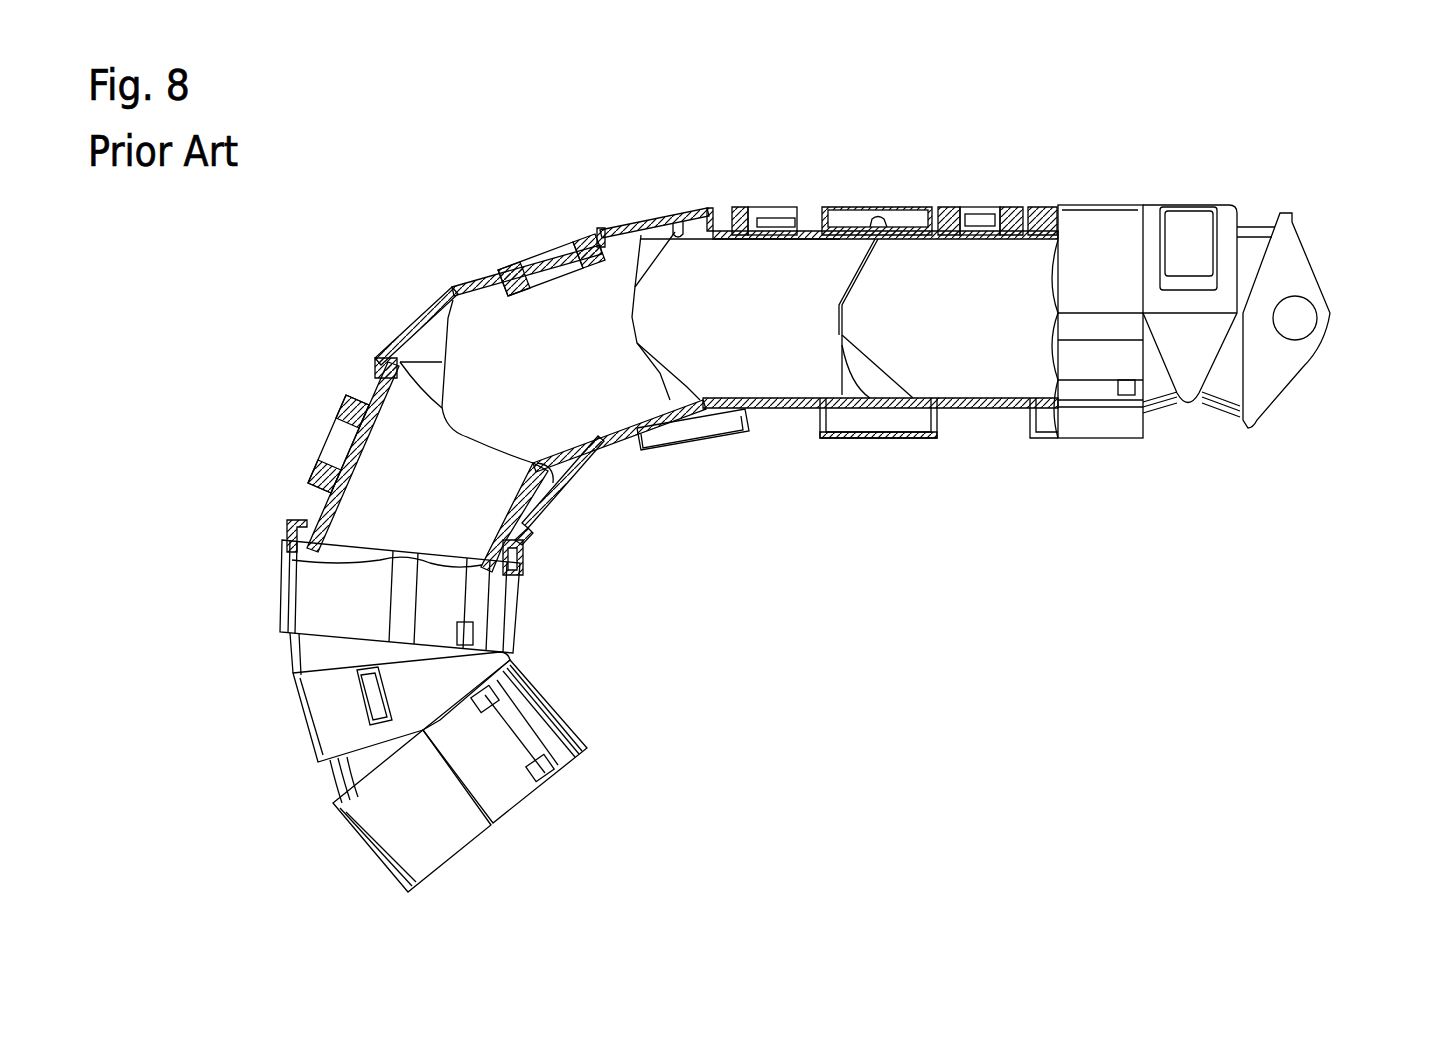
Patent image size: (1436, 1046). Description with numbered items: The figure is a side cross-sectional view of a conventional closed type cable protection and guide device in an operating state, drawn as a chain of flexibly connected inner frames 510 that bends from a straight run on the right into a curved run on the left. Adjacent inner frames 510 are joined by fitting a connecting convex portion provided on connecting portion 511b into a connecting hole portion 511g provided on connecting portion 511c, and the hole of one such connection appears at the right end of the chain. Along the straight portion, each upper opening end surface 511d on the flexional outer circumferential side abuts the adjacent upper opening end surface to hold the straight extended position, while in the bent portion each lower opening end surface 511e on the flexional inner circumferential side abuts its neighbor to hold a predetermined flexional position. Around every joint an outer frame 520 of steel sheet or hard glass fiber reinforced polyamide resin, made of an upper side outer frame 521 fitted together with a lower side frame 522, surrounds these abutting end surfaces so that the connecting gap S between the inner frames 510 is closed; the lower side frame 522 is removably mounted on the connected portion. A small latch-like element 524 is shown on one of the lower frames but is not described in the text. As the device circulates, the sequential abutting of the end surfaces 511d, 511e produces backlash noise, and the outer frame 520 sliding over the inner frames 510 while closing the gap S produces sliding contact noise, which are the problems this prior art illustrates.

The inner frame 510 is at (999, 448).
The connecting portion 511b is at (773, 353).
The connecting portion 511c is at (1273, 363).
The upper opening end surface 511d is at (873, 263).
The lower opening end surface 511e is at (878, 372).
The connecting hole portion 511g is at (1297, 300).
The outer frame 520 is at (1165, 463).
The upper side outer frame 521 is at (390, 338).
The lower side frame 522 is at (690, 420).
The latch 524 is at (535, 780).
The connecting gap S is at (425, 342).